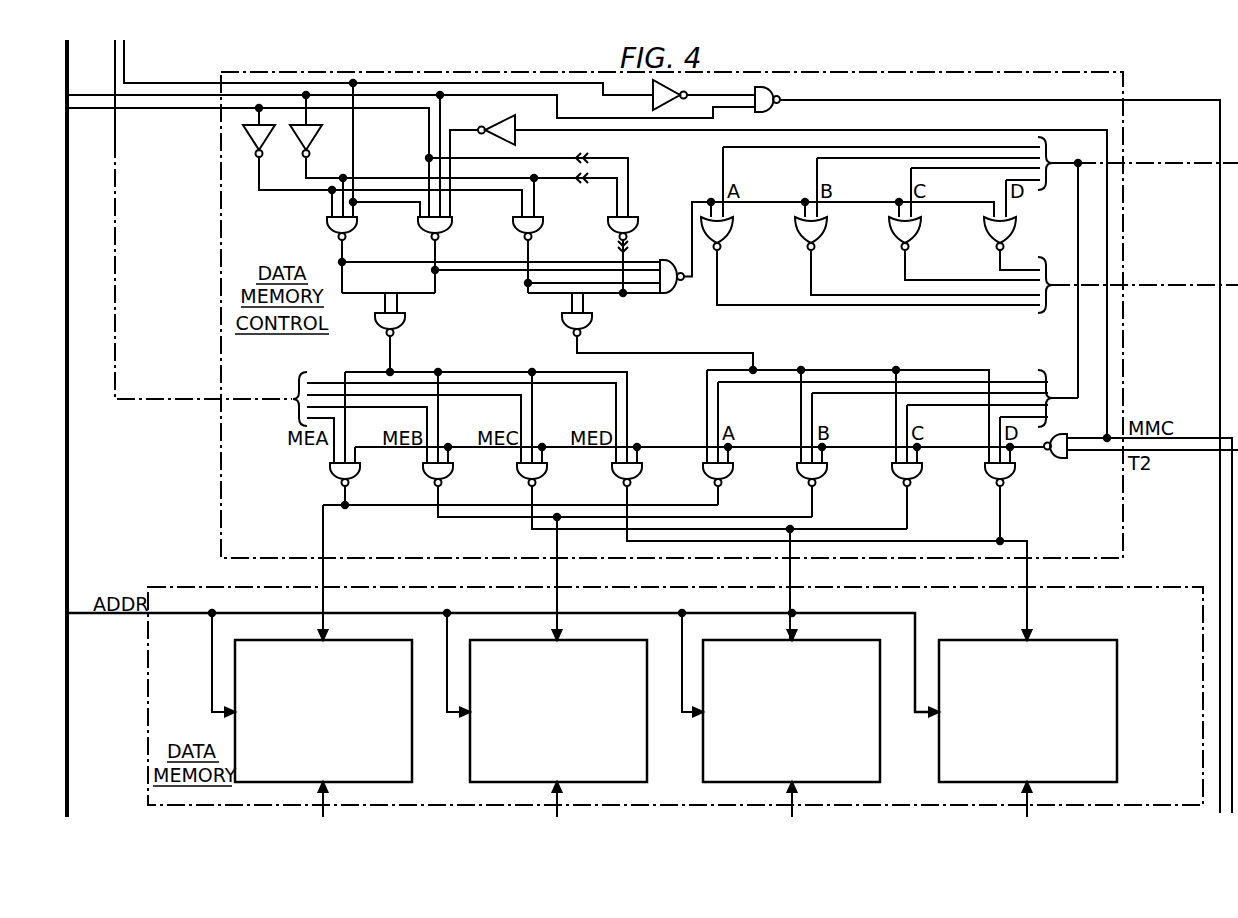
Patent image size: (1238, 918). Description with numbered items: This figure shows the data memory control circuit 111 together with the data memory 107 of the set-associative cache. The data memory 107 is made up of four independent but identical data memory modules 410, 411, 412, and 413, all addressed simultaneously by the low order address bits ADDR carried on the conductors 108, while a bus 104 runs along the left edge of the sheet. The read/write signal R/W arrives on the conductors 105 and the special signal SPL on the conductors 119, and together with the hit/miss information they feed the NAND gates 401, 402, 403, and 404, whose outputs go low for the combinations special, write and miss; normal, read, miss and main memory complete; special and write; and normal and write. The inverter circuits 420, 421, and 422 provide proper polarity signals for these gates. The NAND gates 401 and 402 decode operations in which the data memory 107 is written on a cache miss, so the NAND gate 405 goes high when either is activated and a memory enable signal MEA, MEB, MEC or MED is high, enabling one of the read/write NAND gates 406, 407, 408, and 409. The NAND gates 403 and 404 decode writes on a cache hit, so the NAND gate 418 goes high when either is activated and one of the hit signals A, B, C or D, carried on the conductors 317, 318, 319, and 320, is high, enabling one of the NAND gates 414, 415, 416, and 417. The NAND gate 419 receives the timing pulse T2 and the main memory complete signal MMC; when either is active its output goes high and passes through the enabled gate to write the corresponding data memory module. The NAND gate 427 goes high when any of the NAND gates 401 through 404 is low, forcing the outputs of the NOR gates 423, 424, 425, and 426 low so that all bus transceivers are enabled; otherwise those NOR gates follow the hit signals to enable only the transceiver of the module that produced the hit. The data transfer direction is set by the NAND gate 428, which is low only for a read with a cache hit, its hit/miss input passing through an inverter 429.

The data bus 104 is at (69, 510).
The conductors 105 is at (88, 95).
The conductors 119 is at (88, 110).
The data memory control circuit 111 is at (221, 298).
The conductors 108 is at (82, 612).
The data memory 107 is at (143, 762).
The NAND gate 401 is at (330, 228).
The NAND gate 402 is at (419, 229).
The NAND gate 403 is at (513, 229).
The NAND gate 404 is at (608, 229).
The NAND gate 405 is at (405, 320).
The NAND gate 406 is at (330, 475).
The NAND gate 407 is at (423, 475).
The NAND gate 408 is at (517, 475).
The NAND gate 409 is at (612, 475).
The data memory module 410 is at (412, 756).
The data memory module 411 is at (647, 756).
The data memory module 412 is at (880, 756).
The data memory module 413 is at (1117, 756).
The NAND gate 414 is at (708, 475).
The NAND gate 415 is at (800, 475).
The NAND gate 416 is at (895, 475).
The NAND gate 417 is at (988, 475).
The NAND gate 418 is at (592, 320).
The NAND gate 419 is at (1058, 460).
The inverter circuit 420 is at (276, 140).
The inverter circuit 421 is at (323, 140).
The inverter circuit 422 is at (499, 119).
The NOR gate 423 is at (733, 224).
The NOR gate 424 is at (827, 224).
The NOR gate 425 is at (921, 224).
The NOR gate 426 is at (1016, 224).
The NAND gate 427 is at (702, 299).
The NAND gate 428 is at (774, 91).
The inverter 429 is at (678, 84).
The conductor 317 is at (716, 432).
The conductor 318 is at (810, 432).
The conductor 319 is at (905, 432).
The conductor 320 is at (998, 432).